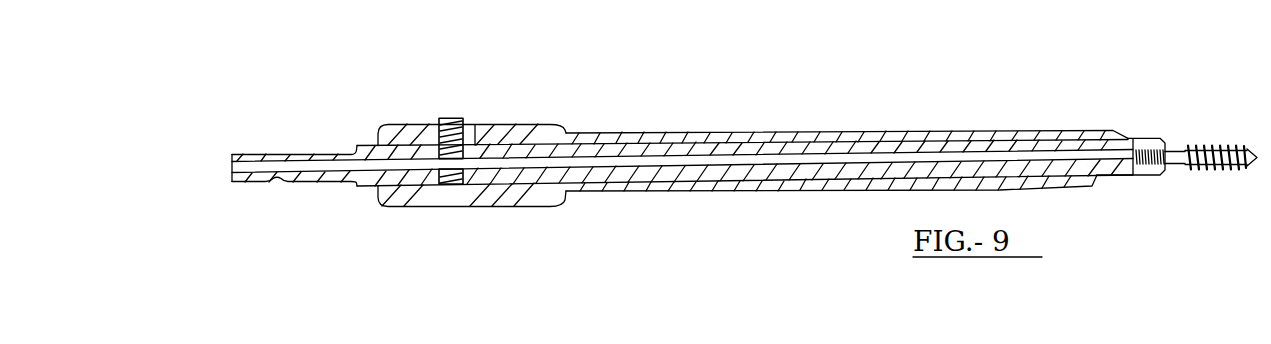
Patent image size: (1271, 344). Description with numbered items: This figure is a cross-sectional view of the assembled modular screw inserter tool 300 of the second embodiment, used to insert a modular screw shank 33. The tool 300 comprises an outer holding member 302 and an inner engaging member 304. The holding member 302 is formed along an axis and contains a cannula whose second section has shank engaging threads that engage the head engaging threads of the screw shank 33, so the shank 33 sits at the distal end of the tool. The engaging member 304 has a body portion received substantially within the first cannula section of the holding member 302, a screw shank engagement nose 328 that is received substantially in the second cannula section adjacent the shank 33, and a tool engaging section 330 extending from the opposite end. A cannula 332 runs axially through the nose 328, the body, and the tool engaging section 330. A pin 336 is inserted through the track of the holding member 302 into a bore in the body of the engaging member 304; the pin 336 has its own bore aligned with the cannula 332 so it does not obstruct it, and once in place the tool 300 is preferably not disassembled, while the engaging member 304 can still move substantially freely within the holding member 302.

The modular screw inserter instrument or tool 300 is at (730, 134).
The holding member 302 is at (850, 133).
The engaging member 304 is at (395, 148).
The pin 336 is at (450, 132).
The tool engaging section 330 is at (272, 155).
The cannula 332 is at (240, 165).
The screw shank engagement nose 328 is at (1106, 150).
The modular screw shank 33 is at (1178, 146).